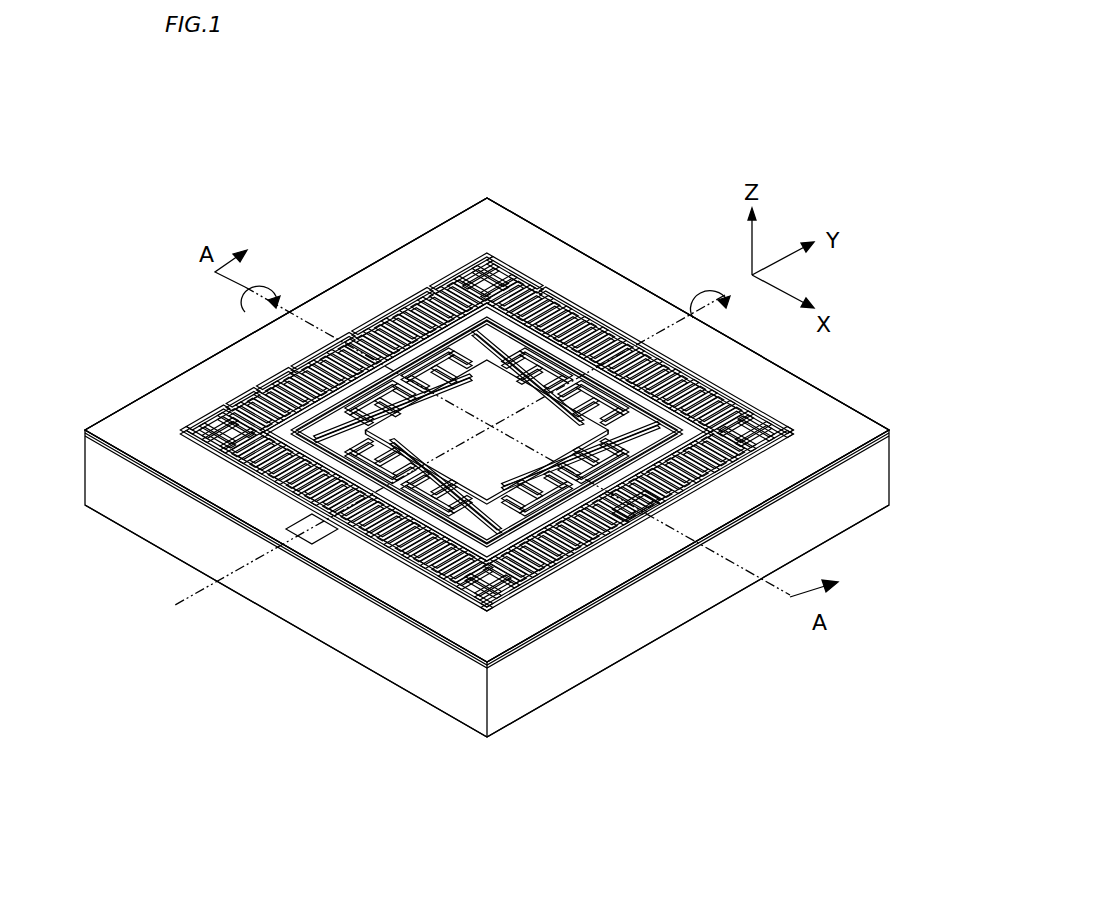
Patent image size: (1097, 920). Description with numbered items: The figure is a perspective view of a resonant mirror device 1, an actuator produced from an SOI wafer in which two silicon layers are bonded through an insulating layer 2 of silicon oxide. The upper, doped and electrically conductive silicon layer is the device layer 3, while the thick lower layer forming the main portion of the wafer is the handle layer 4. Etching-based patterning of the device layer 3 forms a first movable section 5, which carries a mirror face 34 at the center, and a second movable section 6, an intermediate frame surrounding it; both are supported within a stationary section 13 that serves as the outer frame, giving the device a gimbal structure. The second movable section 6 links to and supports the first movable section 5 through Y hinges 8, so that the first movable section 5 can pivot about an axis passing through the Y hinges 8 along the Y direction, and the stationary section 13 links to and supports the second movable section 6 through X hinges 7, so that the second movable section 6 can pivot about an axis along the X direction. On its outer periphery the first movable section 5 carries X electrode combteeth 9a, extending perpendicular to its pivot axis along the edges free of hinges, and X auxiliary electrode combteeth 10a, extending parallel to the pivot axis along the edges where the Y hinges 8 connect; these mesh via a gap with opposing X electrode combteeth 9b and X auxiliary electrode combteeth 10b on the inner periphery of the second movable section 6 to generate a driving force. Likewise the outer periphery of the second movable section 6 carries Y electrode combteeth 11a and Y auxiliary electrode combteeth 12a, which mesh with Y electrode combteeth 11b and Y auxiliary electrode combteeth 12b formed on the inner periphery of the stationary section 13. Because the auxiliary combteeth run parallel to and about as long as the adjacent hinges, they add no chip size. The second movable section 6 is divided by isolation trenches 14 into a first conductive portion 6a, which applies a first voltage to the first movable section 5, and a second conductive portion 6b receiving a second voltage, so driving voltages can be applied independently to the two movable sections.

The resonant mirror device 1 is at (447, 190).
The insulating layer 2 is at (889, 428).
The device layer 3 is at (513, 520).
The handle layer 4 is at (889, 470).
The first movable section 5 is at (492, 460).
The second movable section 6 is at (493, 505).
The first conductive portion 6a is at (700, 420).
The second conductive portion 6b is at (725, 440).
The X hinges 7 is at (413, 458).
The Y hinges 8 is at (412, 470).
The X electrode combteeth 9a is at (313, 350).
The X electrode combteeth 9b is at (470, 555).
The X auxiliary electrode combteeth 10a is at (237, 397).
The X auxiliary electrode combteeth 10b is at (433, 500).
The Y electrode combteeth 11a is at (487, 257).
The Y electrode combteeth 11b is at (197, 420).
The Y auxiliary electrode combteeth 12a is at (400, 312).
The Y auxiliary electrode combteeth 12b is at (267, 380).
The stationary section 13 is at (620, 292).
The isolation trenches 14 is at (705, 428).
The mirror face 34 is at (556, 505).